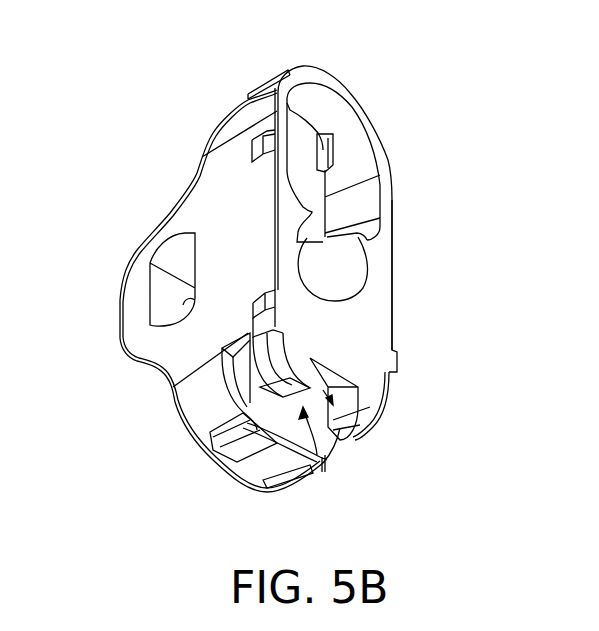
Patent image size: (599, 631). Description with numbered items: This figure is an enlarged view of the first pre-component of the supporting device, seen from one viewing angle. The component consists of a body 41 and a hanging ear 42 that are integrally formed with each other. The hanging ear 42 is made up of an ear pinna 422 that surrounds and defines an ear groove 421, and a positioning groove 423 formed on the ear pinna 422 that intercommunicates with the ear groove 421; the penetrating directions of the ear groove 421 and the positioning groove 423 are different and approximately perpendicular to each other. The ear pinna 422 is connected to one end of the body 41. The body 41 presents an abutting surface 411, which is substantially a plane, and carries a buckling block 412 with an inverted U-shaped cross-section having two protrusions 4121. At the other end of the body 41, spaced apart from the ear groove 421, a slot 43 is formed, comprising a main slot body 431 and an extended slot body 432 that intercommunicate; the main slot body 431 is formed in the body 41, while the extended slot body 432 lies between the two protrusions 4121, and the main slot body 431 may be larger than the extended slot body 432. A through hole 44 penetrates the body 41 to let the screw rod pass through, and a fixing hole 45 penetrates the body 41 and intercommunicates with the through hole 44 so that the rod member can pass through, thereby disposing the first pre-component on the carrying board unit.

The body 41 is at (223, 202).
The hanging ear 42 is at (495, 17).
The ear groove 421 is at (303, 157).
The ear pinna 422 is at (383, 160).
The positioning groove 423 is at (307, 123).
The through hole 44 is at (338, 268).
The abutting surface 411 is at (367, 317).
The buckling block 412 is at (340, 363).
The protrusions 4121 is at (300, 364).
The slot 43 is at (508, 433).
The main slot body 431 is at (325, 468).
The extended slot body 432 is at (357, 441).
The fixing hole 45 is at (165, 302).